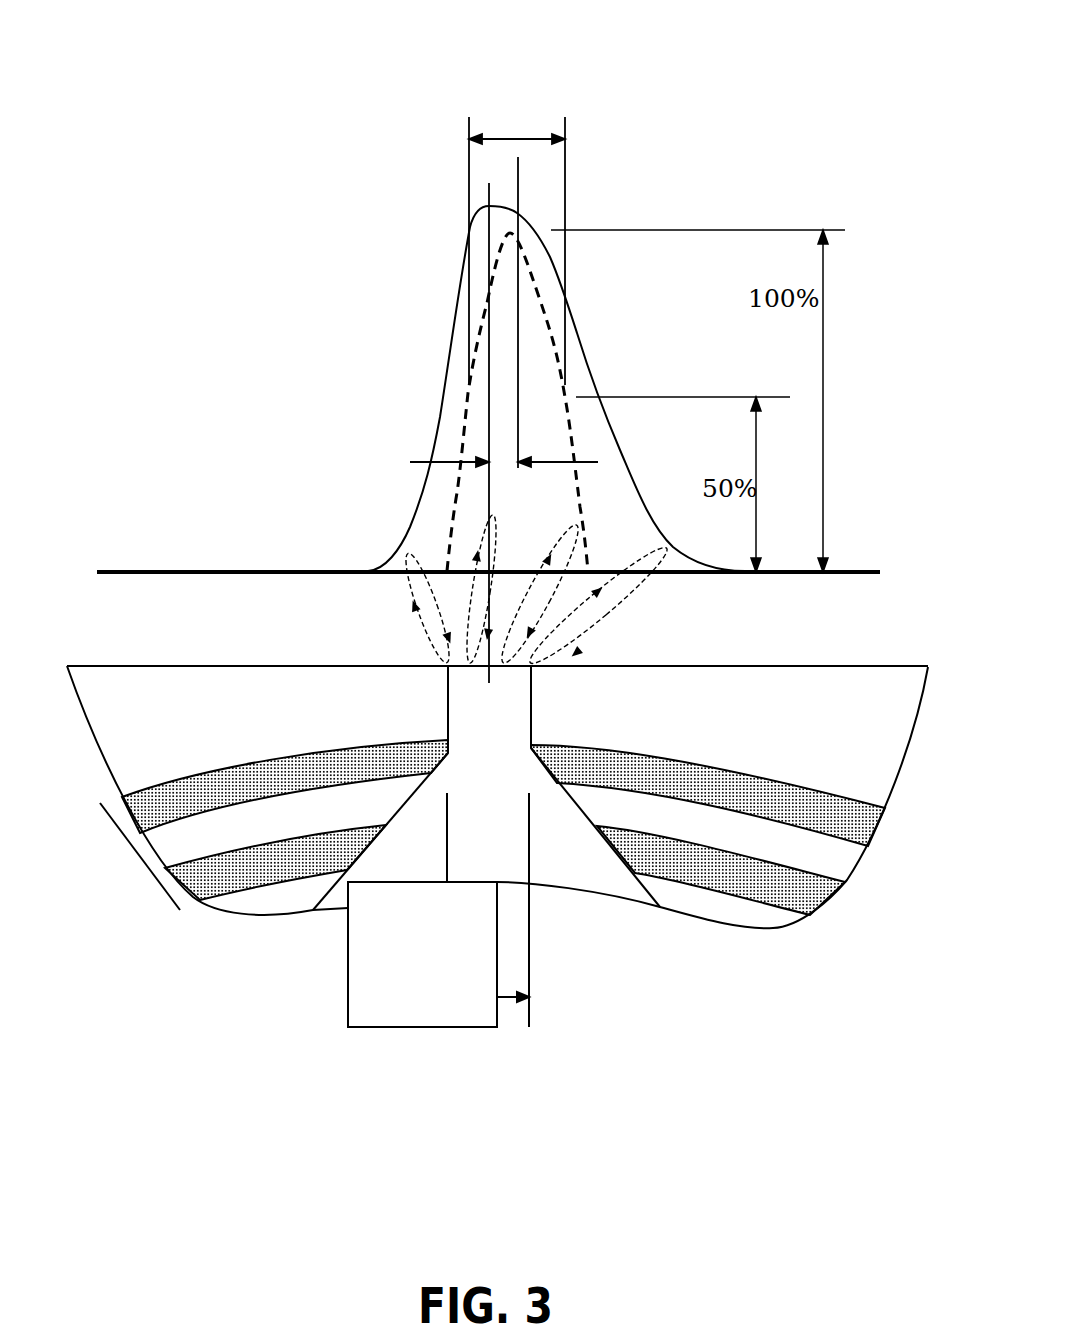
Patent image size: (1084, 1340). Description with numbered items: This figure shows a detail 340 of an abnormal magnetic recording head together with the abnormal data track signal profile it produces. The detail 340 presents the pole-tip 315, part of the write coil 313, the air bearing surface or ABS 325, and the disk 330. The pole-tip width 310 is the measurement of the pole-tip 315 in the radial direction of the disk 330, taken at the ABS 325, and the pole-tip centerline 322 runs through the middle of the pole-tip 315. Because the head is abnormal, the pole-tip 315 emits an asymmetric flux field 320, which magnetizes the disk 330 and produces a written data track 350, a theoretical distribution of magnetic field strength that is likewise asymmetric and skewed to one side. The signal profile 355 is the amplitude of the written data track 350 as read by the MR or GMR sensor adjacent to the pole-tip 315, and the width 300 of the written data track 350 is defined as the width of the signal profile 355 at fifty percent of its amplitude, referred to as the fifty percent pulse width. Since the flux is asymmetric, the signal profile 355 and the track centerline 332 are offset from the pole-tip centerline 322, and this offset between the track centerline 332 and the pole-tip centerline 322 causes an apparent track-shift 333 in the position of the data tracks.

The width 300 is at (498, 139).
The pole-tip width 310 is at (497, 1027).
The write coil 313 is at (132, 862).
The pole-tip 315 is at (470, 672).
The asymmetric flux field 320 is at (617, 623).
The pole-tip centerline 322 is at (487, 507).
The ABS 325 is at (725, 665).
The disk 330 is at (272, 573).
The track centerline 332 is at (522, 188).
The apparent track-shift 333 is at (410, 462).
The detail of a magnetic recording head 340 is at (747, 937).
The written data track 350 is at (438, 415).
The signal profile 355 is at (483, 330).